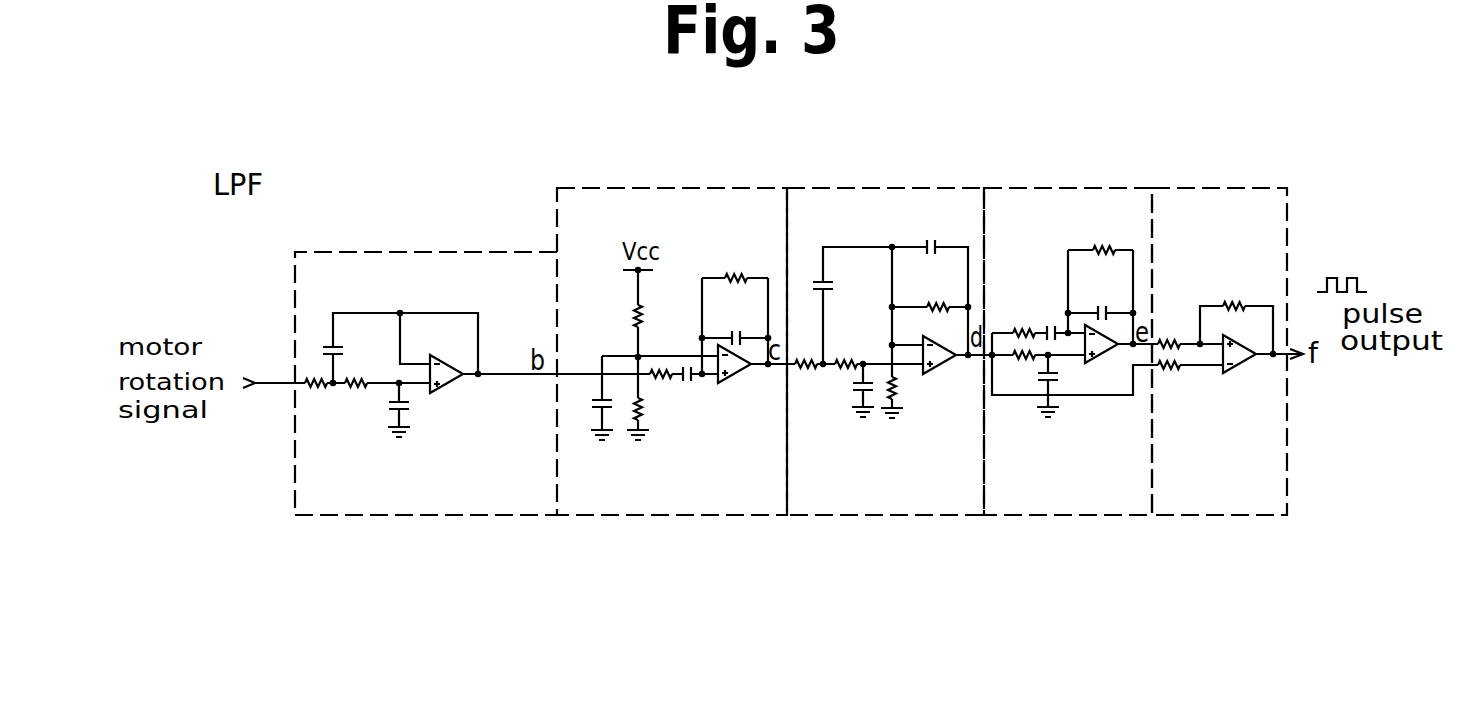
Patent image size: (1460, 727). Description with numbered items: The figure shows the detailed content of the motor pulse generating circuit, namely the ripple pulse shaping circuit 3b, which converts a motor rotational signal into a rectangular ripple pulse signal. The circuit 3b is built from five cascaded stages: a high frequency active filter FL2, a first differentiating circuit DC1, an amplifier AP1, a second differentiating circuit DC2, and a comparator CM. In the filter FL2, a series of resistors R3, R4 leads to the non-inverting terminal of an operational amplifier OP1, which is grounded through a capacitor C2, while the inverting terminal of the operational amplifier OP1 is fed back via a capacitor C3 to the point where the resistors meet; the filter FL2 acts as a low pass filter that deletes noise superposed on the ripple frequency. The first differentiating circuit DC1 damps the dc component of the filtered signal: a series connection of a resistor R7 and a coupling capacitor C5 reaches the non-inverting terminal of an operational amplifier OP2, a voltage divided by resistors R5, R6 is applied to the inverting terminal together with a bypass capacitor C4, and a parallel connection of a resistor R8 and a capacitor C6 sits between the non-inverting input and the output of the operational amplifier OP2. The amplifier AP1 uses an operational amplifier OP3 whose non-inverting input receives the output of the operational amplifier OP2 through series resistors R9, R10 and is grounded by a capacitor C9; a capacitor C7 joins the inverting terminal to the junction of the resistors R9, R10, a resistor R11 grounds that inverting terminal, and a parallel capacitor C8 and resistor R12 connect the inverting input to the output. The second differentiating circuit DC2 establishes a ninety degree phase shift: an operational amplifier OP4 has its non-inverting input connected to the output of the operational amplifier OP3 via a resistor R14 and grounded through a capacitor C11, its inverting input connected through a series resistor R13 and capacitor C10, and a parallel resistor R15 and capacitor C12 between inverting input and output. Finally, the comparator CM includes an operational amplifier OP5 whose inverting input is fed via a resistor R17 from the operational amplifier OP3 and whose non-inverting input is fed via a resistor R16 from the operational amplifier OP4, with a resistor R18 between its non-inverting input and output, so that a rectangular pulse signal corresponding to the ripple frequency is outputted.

The ripple pulse shaping circuit 3b is at (979, 538).
The high frequency active filter FL2 is at (426, 366).
The first differentiating circuit DC1 is at (672, 332).
The amplifier AP1 is at (885, 332).
The second differentiating circuit DC2 is at (1068, 333).
The comparator CM is at (1219, 332).
The resistor R3 is at (317, 387).
The resistor R4 is at (364, 407).
The capacitor C3 is at (400, 348).
The capacitor C2 is at (410, 407).
The operational amplifier OP1 is at (468, 393).
The resistor R5 is at (611, 317).
The resistor R6 is at (633, 408).
The resistor R7 is at (657, 380).
The bypass capacitor C4 is at (590, 403).
The coupling capacitor C5 is at (686, 396).
The capacitor C6 is at (735, 326).
The resistor R8 is at (735, 252).
The operational amplifier OP2 is at (737, 385).
The resistor R9 is at (803, 360).
The resistor R10 is at (853, 342).
The resistor R11 is at (892, 390).
The resistor R12 is at (925, 286).
The capacitor C7 is at (870, 305).
The capacitor C8 is at (938, 276).
The capacitor C9 is at (857, 383).
The operational amplifier OP3 is at (946, 377).
The resistor R13 is at (1015, 312).
The resistor R14 is at (1023, 363).
The resistor R15 is at (1102, 228).
The capacitor C10 is at (1052, 328).
The capacitor C11 is at (1057, 380).
The capacitor C12 is at (1100, 297).
The operational amplifier OP4 is at (1102, 363).
The resistor R16 is at (1173, 337).
The resistor R17 is at (1172, 370).
The resistor R18 is at (1236, 304).
The operational amplifier OP5 is at (1246, 377).